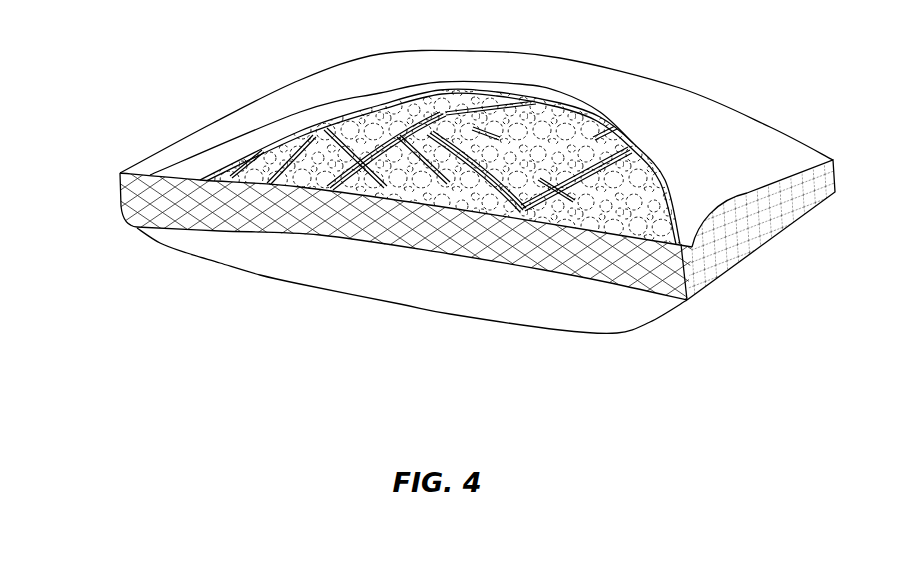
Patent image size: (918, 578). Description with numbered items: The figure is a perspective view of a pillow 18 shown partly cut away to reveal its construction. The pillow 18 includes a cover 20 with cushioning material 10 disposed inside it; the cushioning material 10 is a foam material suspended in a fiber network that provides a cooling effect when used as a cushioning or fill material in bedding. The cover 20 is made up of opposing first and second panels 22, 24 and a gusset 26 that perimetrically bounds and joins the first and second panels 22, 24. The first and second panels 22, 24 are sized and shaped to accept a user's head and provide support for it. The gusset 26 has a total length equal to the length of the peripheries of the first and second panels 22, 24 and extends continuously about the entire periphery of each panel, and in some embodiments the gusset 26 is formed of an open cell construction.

The cushioning material 10 is at (537, 119).
The pillow 18 is at (435, 223).
The cover 20 is at (371, 78).
The first panel 22 is at (717, 137).
The second panel 24 is at (578, 305).
The gusset 26 is at (118, 198).